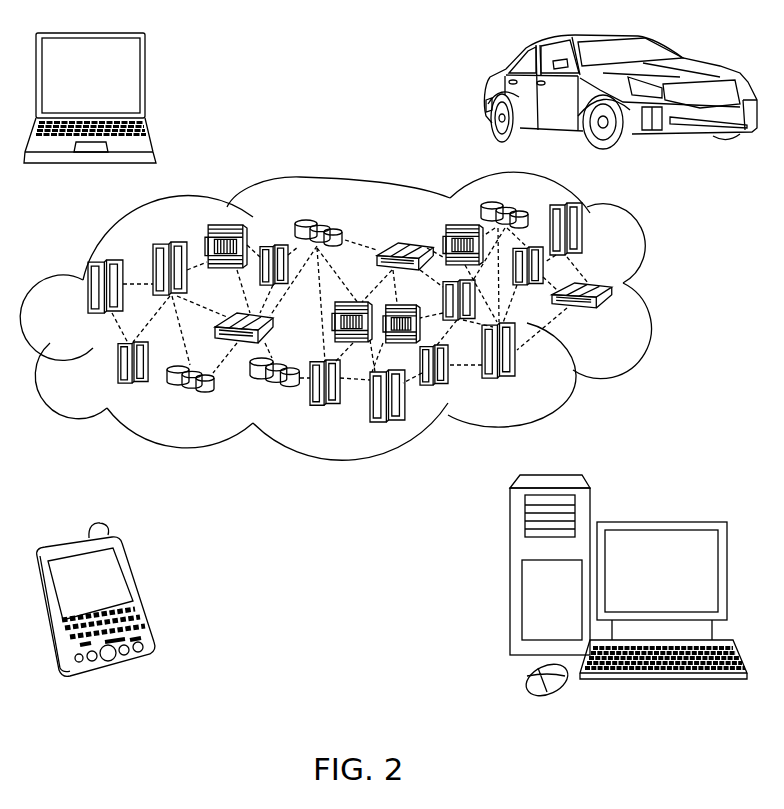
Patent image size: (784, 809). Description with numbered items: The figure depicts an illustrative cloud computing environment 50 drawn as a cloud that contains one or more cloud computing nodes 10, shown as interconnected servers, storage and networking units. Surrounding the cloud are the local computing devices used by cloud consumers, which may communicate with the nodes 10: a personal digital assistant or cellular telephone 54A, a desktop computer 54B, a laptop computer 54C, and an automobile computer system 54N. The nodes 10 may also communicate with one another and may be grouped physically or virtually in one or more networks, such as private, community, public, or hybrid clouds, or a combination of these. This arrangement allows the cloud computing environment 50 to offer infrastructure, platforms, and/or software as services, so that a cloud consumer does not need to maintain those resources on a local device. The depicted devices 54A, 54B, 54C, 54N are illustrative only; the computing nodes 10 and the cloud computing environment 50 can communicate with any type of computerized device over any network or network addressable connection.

The cloud computing nodes 10 is at (636, 333).
The cloud computing environment 50 is at (661, 296).
The personal digital assistant (PDA) or cellular telephone 54A is at (137, 597).
The desktop computer 54B is at (678, 520).
The laptop computer 54C is at (144, 74).
The automobile computer system 54N is at (486, 92).